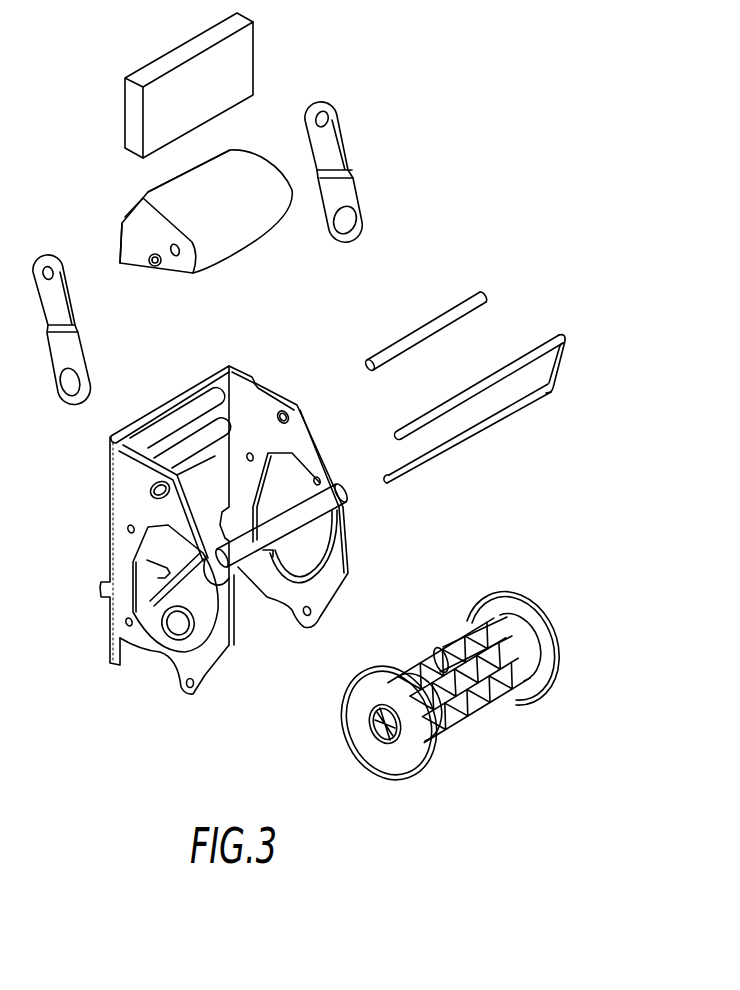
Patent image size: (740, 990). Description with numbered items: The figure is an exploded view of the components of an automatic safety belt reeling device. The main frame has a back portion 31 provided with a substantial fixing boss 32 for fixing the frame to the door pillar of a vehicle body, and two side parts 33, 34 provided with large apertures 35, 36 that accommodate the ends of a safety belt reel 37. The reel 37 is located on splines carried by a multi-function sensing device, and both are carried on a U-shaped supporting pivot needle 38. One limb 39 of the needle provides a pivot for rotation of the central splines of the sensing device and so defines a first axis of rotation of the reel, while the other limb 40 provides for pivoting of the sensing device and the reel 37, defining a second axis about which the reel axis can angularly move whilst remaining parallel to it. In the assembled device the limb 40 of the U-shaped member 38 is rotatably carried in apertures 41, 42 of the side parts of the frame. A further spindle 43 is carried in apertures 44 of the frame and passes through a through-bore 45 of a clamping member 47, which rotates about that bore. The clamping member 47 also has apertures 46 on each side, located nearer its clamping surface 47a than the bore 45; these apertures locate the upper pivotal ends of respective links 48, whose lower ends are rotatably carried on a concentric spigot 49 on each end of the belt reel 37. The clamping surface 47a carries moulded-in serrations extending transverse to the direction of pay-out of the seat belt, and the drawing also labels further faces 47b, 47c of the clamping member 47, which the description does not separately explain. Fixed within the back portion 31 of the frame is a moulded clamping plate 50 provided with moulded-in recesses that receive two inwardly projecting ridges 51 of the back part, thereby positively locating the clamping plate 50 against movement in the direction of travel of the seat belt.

The back portion 31 is at (235, 533).
The fixing boss 32 is at (172, 633).
The side part 33 is at (318, 487).
The side part 34 is at (135, 458).
The aperture 35 is at (318, 558).
The aperture 36 is at (200, 693).
The safety belt reel 37 is at (435, 677).
The U-shaped supporting pivot needle 38 is at (568, 364).
The limb 39 is at (467, 433).
The limb 40 is at (479, 387).
The aperture 41 is at (322, 479).
The aperture 42 is at (190, 563).
The spindle 43 is at (443, 316).
The aperture 44 is at (157, 495).
The through-bore 45 is at (179, 252).
The aperture 46 is at (155, 266).
The clamping member 47 is at (177, 211).
The clamping surface 47a is at (177, 173).
The block top edge 47b is at (190, 166).
The block side face 47c is at (120, 246).
The link 48 is at (327, 147).
The concentric spigot 49 is at (380, 740).
The clamping plate 50 is at (233, 60).
The inwardly projecting ridge 51 is at (198, 440).